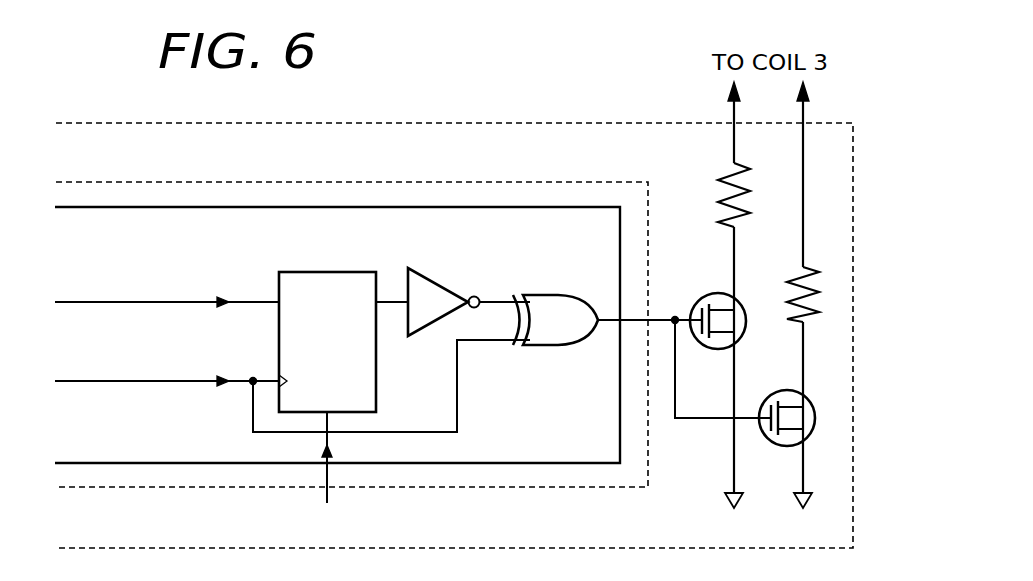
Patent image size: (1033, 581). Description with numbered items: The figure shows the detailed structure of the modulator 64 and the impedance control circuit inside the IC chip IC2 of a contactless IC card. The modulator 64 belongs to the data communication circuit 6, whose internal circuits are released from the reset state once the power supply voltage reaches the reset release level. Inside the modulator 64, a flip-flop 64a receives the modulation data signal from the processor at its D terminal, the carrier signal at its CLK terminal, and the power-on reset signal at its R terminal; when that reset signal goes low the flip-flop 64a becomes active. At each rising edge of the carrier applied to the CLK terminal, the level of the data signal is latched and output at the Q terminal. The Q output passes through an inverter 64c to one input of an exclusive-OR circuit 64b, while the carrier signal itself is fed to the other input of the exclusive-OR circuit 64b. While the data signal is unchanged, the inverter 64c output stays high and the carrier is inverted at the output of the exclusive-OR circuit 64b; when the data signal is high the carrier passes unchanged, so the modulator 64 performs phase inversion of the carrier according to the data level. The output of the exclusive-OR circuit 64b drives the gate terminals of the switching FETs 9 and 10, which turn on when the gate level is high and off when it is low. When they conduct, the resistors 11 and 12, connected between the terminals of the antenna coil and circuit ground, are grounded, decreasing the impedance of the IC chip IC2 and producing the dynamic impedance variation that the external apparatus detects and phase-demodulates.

The IC chip IC2 is at (604, 123).
The data communication circuit 6 is at (576, 182).
The modulator 64 is at (494, 207).
The flip-flop 64a is at (340, 272).
The exclusive-OR circuit 64b is at (560, 295).
The inverter 64c is at (441, 279).
The FET 9 is at (700, 299).
The FET 10 is at (770, 396).
The resistor 11 is at (744, 165).
The resistor 12 is at (805, 267).